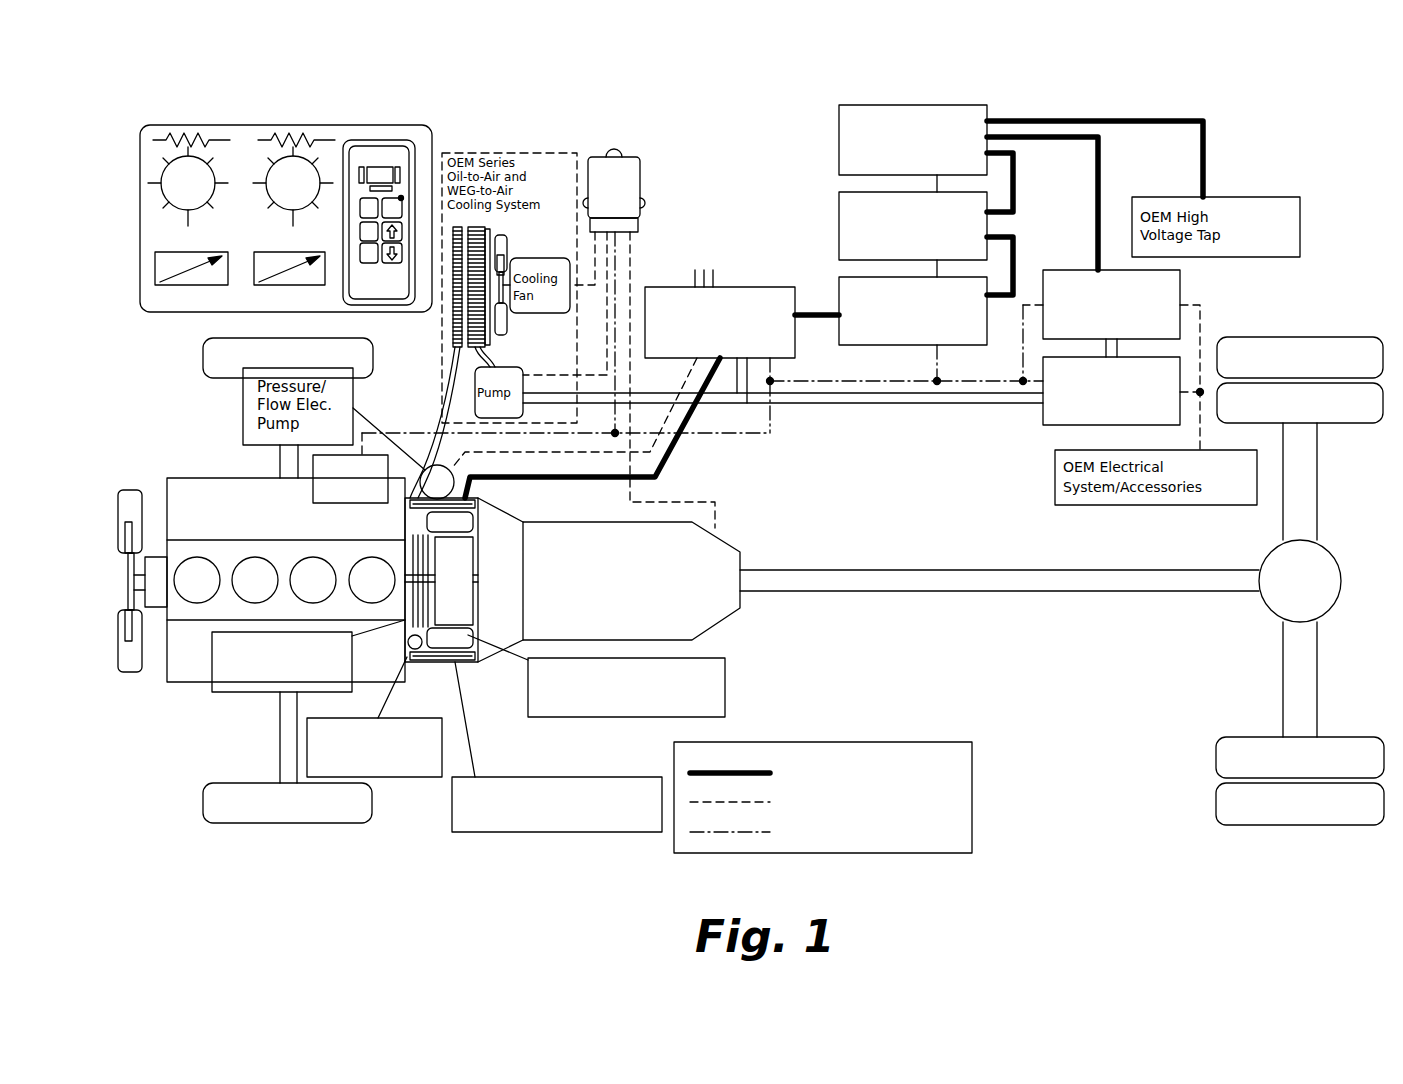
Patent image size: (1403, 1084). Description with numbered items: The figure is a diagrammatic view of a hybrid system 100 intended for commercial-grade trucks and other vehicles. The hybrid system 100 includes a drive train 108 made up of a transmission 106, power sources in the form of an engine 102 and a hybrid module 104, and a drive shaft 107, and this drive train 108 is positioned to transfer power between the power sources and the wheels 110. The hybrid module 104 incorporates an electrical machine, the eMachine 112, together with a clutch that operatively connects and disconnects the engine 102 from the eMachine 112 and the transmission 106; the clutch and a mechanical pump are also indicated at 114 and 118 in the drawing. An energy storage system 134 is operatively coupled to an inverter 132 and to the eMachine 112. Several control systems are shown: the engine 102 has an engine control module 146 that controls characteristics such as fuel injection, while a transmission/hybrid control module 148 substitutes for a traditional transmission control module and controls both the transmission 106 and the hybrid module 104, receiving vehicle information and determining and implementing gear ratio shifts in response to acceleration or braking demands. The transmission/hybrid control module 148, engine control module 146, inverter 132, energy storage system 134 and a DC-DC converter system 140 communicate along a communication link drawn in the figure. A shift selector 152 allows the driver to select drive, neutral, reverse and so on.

The hybrid system 100 is at (1248, 120).
The engine 102 is at (170, 478).
The hybrid module 104 is at (435, 652).
The transmission 106 is at (735, 548).
The drive shaft 107 is at (910, 592).
The drive train 108 is at (1022, 592).
The wheels 110 is at (1352, 337).
The eMachine 112 is at (483, 640).
The disconnect clutch 114 is at (410, 560).
The mechanical pump 118 is at (408, 650).
The inverter 132 is at (747, 287).
The energy storage system 134 is at (863, 100).
The DC-DC converter system 140 is at (1185, 286).
The engine control module 146 is at (313, 475).
The transmission/hybrid control module 148 is at (603, 150).
The shift selector 152 is at (373, 142).